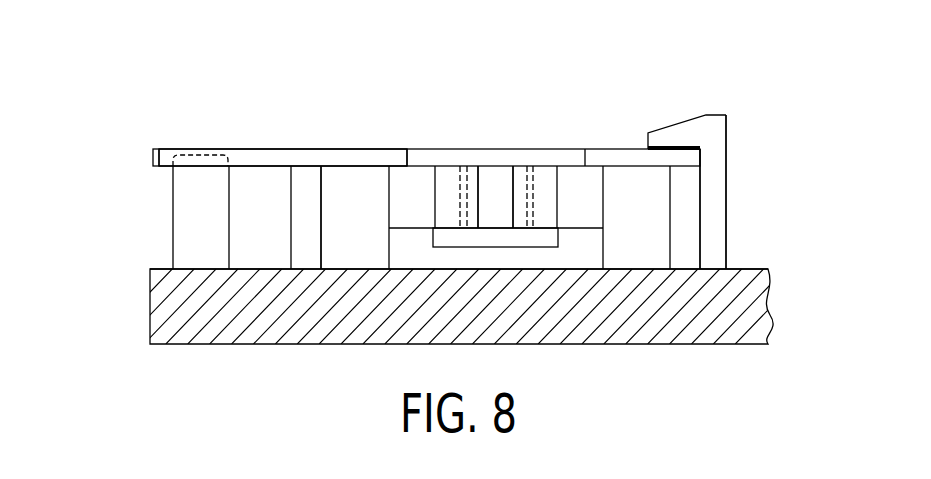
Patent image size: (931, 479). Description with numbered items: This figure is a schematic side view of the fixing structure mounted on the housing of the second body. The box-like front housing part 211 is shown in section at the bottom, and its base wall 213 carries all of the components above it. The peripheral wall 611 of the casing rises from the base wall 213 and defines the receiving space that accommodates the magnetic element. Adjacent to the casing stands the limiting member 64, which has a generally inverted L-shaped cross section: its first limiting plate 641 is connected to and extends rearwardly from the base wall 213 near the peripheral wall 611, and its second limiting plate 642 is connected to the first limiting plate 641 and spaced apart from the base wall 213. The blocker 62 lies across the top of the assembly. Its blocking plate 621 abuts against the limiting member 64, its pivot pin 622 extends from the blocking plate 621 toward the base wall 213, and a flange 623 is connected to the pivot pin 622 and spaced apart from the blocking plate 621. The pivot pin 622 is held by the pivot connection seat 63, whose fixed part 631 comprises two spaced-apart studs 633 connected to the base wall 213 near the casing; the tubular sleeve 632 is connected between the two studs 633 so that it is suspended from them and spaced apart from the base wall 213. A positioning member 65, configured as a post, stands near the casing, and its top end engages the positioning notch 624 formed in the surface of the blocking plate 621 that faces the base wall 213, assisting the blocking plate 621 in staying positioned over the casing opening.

The blocker 62 is at (269, 146).
The blocking plate 621 is at (247, 158).
The pivot pin 622 is at (497, 200).
The flange 623 is at (452, 235).
The positioning notch 624 is at (198, 153).
The pivot connection seat 63 is at (680, 233).
The fixed part 631 is at (628, 247).
The tubular sleeve 632 is at (541, 188).
The studs 633 is at (345, 192).
The limiting member 64 is at (728, 161).
The first limiting plate 641 is at (727, 157).
The second limiting plate 642 is at (676, 138).
The peripheral wall 611 is at (700, 199).
The positioning member 65 is at (190, 203).
The front housing part 211 is at (175, 322).
The base wall 213 is at (163, 268).